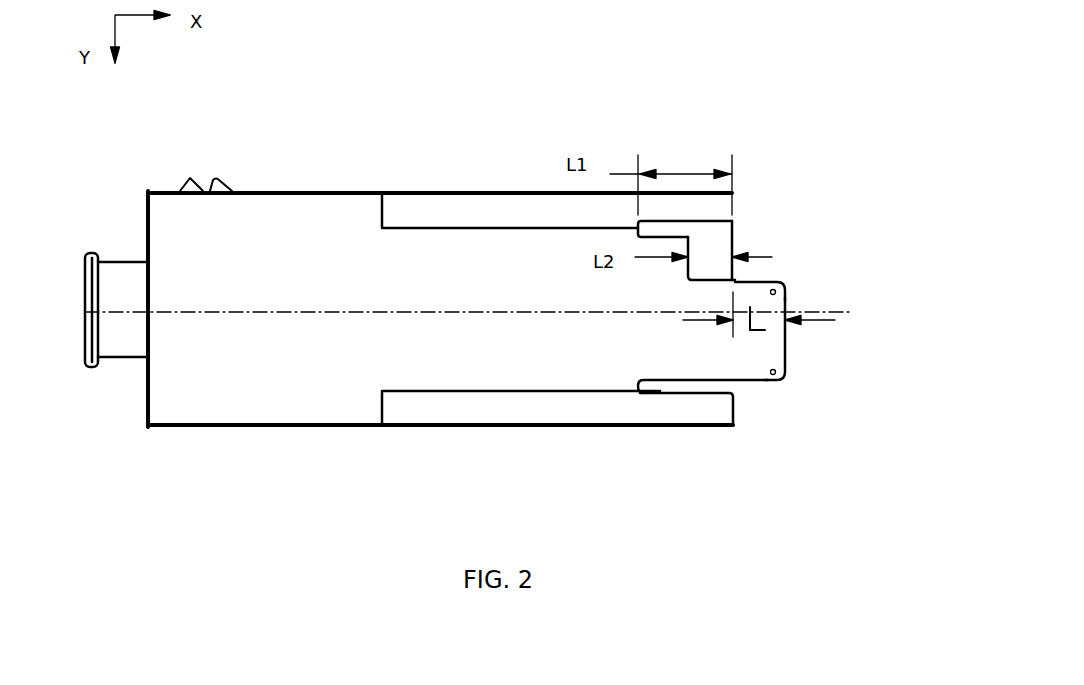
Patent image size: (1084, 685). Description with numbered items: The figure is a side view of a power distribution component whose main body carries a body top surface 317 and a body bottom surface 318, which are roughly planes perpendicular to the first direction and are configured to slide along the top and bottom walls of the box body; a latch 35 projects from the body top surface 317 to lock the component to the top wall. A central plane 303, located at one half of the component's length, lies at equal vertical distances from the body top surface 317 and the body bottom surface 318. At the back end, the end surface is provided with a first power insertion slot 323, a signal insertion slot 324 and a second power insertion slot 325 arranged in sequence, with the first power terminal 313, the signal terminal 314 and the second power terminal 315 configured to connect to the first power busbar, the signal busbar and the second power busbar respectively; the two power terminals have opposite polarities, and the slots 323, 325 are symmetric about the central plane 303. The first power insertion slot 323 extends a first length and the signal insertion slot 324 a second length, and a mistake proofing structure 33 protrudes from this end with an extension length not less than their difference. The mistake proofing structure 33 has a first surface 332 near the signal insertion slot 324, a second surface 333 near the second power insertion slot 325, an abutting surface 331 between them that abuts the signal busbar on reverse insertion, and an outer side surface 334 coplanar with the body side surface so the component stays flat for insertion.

The latch 35 is at (222, 181).
The body top surface 317 is at (352, 192).
The body bottom surface 318 is at (278, 426).
The central plane 303 is at (207, 312).
The first power terminal 313 is at (688, 237).
The first power insertion slot 323 is at (653, 222).
The signal terminal 314 is at (718, 273).
The signal insertion slot 324 is at (702, 277).
The mistake proofing structure 33 is at (786, 323).
The first surface 332 is at (745, 283).
The abutting surface 331 is at (805, 321).
The outer side surface 334 is at (778, 358).
The second surface 333 is at (772, 381).
The second power terminal 315 is at (683, 392).
The second power insertion slot 325 is at (643, 395).